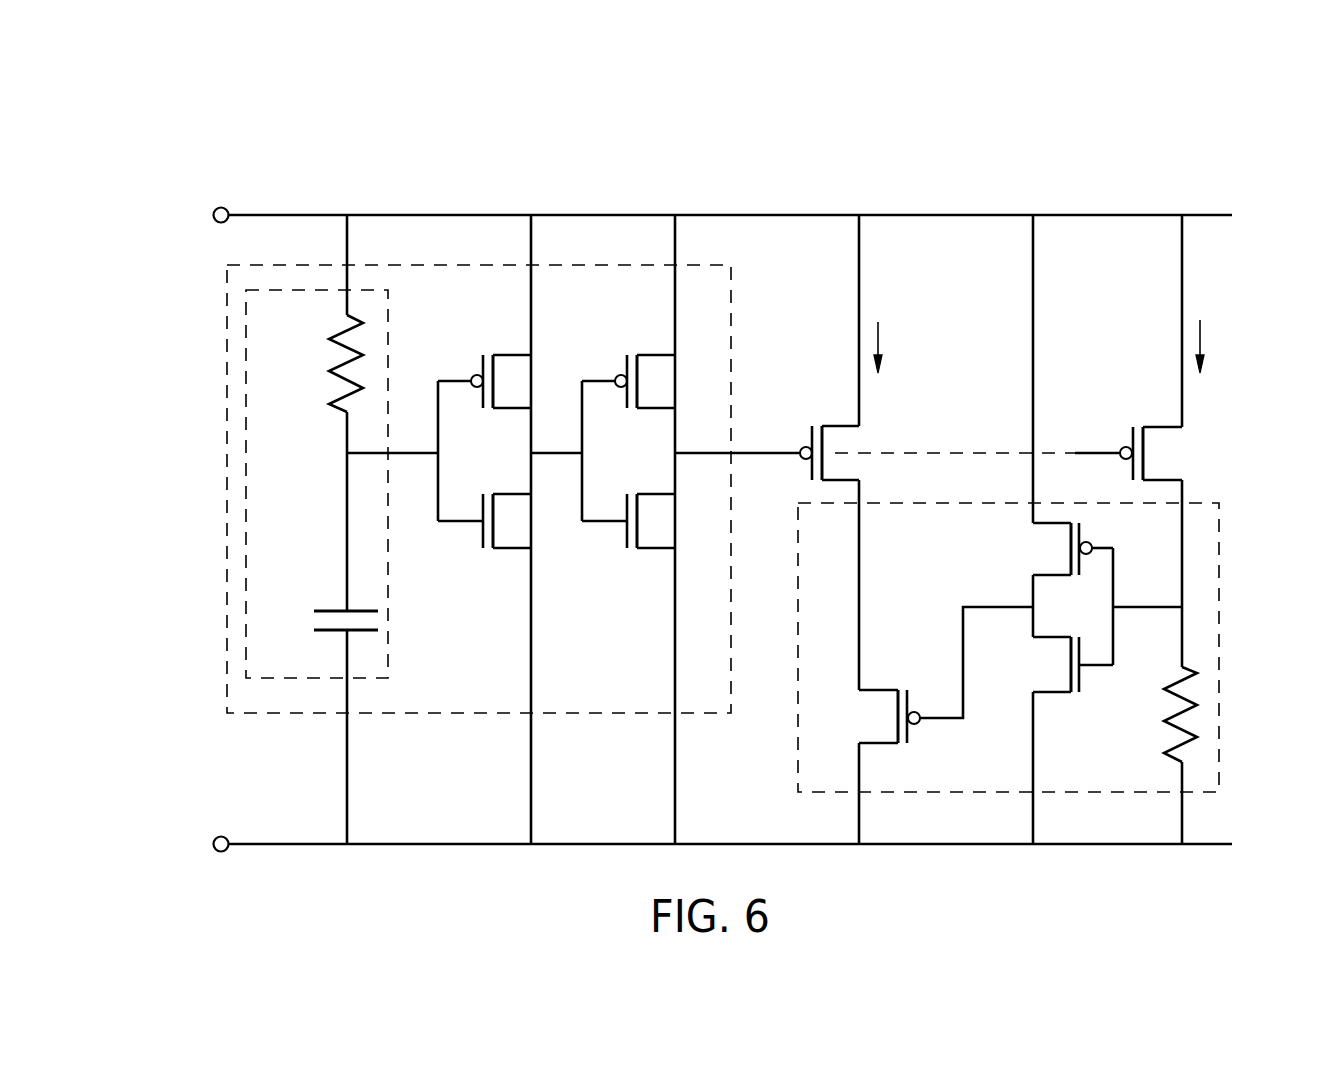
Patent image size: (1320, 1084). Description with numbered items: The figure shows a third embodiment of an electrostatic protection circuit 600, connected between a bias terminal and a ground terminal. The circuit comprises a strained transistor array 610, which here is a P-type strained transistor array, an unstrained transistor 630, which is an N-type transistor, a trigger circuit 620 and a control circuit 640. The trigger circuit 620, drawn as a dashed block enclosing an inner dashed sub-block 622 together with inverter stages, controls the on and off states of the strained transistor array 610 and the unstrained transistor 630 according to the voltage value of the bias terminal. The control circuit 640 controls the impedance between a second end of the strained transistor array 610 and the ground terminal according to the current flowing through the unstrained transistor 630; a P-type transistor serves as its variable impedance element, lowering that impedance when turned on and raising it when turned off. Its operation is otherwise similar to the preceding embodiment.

The electrostatic protection circuit 600 is at (1196, 165).
The strained transistor array 610 is at (827, 410).
The trigger circuit 620 is at (227, 337).
The RC network 622 is at (246, 500).
The unstrained transistor 630 is at (1147, 408).
The control circuit 640 is at (1219, 612).